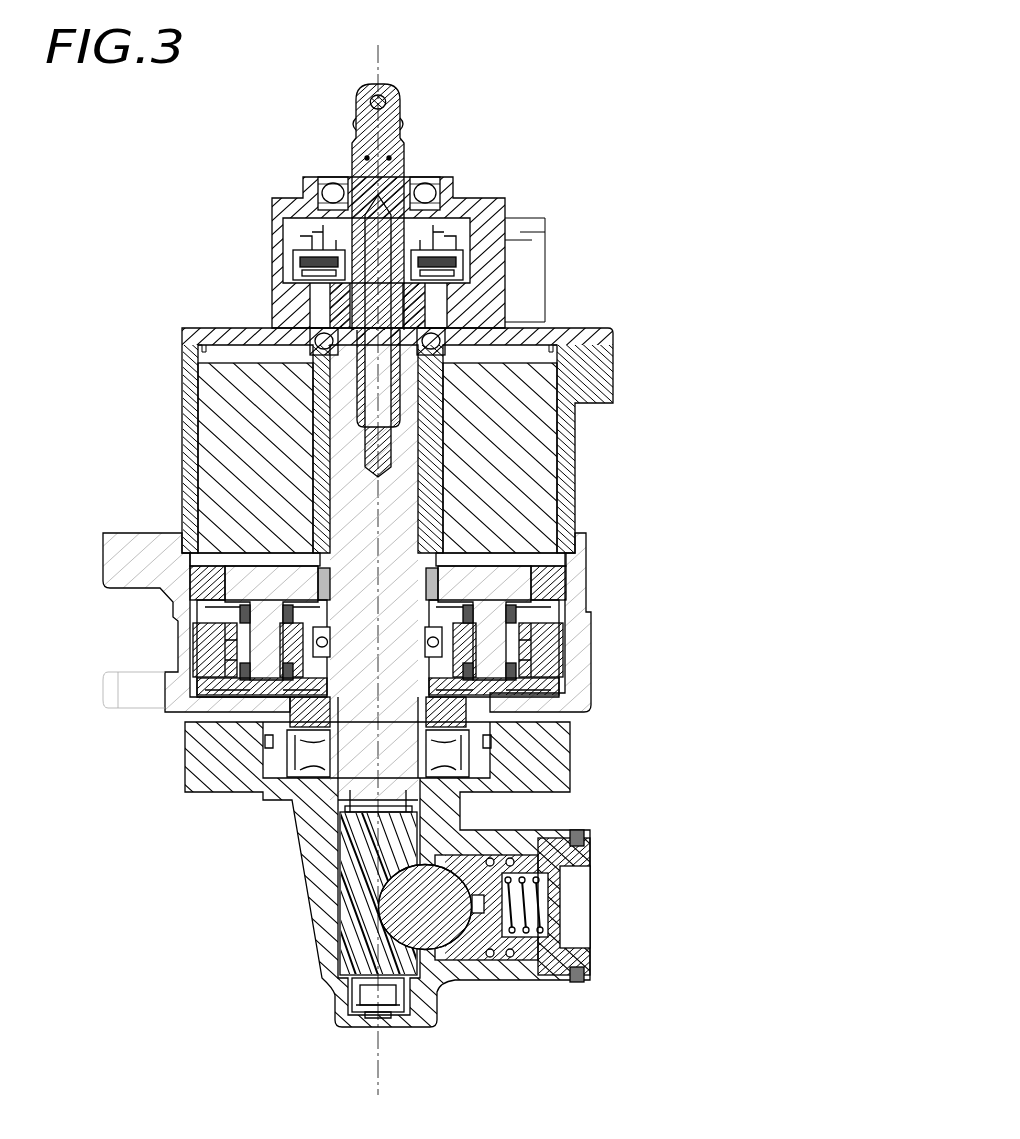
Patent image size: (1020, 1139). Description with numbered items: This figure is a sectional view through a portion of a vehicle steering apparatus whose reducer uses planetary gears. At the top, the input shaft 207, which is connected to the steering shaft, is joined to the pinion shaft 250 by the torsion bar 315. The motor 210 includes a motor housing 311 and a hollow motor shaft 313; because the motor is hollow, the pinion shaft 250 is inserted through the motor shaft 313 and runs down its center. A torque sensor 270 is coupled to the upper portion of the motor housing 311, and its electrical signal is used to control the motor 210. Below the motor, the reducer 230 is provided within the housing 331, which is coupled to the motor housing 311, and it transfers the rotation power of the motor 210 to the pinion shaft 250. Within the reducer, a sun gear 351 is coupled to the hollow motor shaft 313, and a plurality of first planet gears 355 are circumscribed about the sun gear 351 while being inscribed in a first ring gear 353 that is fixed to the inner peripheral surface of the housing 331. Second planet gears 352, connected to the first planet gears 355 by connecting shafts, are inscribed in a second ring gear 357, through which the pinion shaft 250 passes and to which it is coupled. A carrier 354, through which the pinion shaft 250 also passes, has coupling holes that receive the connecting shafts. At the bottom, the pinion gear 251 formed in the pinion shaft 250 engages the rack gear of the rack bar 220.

The input shaft 207 is at (404, 97).
The torsion bar 315 is at (356, 132).
The torque sensor 270 is at (452, 244).
The motor housing 311 is at (182, 393).
The motor shaft 313 is at (448, 416).
The motor 210 is at (603, 474).
The housing 331 is at (108, 540).
The first planet gears 355 is at (566, 574).
The first ring gear 353 is at (512, 580).
The sun gear 351 is at (552, 592).
The second planet gears 352 is at (235, 640).
The second ring gear 357 is at (520, 643).
The carrier 354 is at (300, 670).
The reducer 230 is at (603, 708).
The pinion shaft 250 is at (340, 800).
The pinion gear 251 is at (356, 905).
The rack bar 220 is at (443, 930).